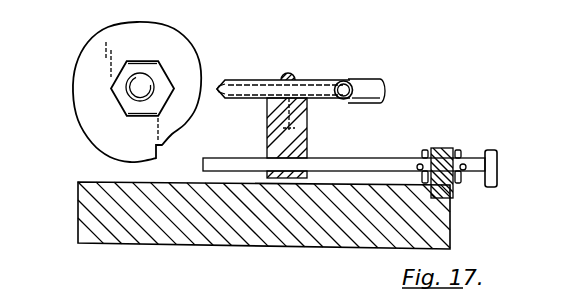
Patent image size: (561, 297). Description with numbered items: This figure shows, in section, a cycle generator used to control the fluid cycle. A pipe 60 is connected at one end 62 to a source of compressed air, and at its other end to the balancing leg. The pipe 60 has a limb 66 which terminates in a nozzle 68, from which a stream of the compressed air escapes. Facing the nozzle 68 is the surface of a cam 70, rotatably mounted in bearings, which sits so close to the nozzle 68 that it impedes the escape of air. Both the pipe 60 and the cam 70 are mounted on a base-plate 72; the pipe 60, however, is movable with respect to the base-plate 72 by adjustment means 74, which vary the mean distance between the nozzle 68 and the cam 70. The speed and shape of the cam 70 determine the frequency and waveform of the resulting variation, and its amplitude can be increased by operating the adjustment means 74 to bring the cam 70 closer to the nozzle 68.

The pipe 60 is at (347, 80).
The one end 62 is at (378, 78).
The limb 66 is at (312, 80).
The nozzle 68 is at (218, 94).
The cam 70 is at (80, 75).
The base-plate 72 is at (445, 222).
The adjustment means 74 is at (490, 153).